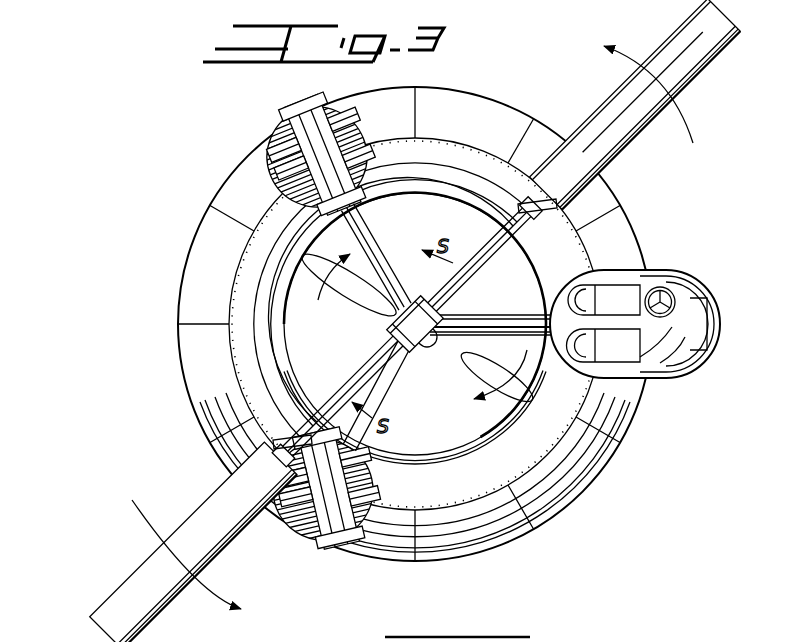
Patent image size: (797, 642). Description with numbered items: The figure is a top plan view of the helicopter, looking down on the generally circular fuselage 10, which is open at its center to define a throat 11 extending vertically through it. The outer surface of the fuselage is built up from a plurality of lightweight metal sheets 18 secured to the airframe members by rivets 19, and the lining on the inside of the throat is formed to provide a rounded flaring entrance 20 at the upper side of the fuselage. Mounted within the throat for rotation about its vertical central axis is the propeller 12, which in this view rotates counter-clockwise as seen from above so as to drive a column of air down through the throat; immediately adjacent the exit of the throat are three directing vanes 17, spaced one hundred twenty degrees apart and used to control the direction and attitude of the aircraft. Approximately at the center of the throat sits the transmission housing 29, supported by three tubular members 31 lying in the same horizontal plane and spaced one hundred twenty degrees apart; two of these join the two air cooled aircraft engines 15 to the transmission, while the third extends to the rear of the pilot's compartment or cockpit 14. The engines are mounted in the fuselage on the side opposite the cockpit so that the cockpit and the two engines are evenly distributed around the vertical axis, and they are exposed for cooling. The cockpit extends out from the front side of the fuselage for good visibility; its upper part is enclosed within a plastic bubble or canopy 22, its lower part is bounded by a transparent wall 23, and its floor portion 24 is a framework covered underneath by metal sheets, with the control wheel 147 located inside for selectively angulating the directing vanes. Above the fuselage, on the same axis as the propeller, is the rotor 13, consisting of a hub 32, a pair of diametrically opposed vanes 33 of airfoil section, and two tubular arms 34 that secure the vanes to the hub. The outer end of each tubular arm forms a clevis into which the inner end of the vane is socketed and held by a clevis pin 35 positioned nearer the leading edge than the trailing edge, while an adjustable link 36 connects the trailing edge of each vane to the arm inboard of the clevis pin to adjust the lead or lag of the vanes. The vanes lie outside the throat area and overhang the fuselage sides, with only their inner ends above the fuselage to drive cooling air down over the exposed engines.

The fuselage 10 is at (588, 481).
The throat 11 is at (437, 450).
The propeller 12 is at (364, 300).
The rotor 13 is at (492, 240).
The pilot's compartment or cockpit 14 is at (692, 279).
The air cooled aircraft engine 15 is at (288, 128).
The directing vane 17 is at (382, 236).
The lightweight metal sheet 18 is at (456, 103).
The rivet 19 is at (518, 128).
The rounded flaring entrance 20 is at (266, 306).
The plastic bubble or canopy 22 is at (640, 275).
The transparent wall 23 is at (712, 315).
The floor portion 24 is at (705, 357).
The transmission housing 29 is at (429, 354).
The tubular member 31 is at (512, 312).
The hub 32 is at (393, 339).
The vane 33 is at (625, 132).
The tubular arm 34 is at (478, 246).
The clevis pin 35 is at (542, 188).
The adjustable link 36 is at (537, 216).
The control wheel 147 is at (676, 300).